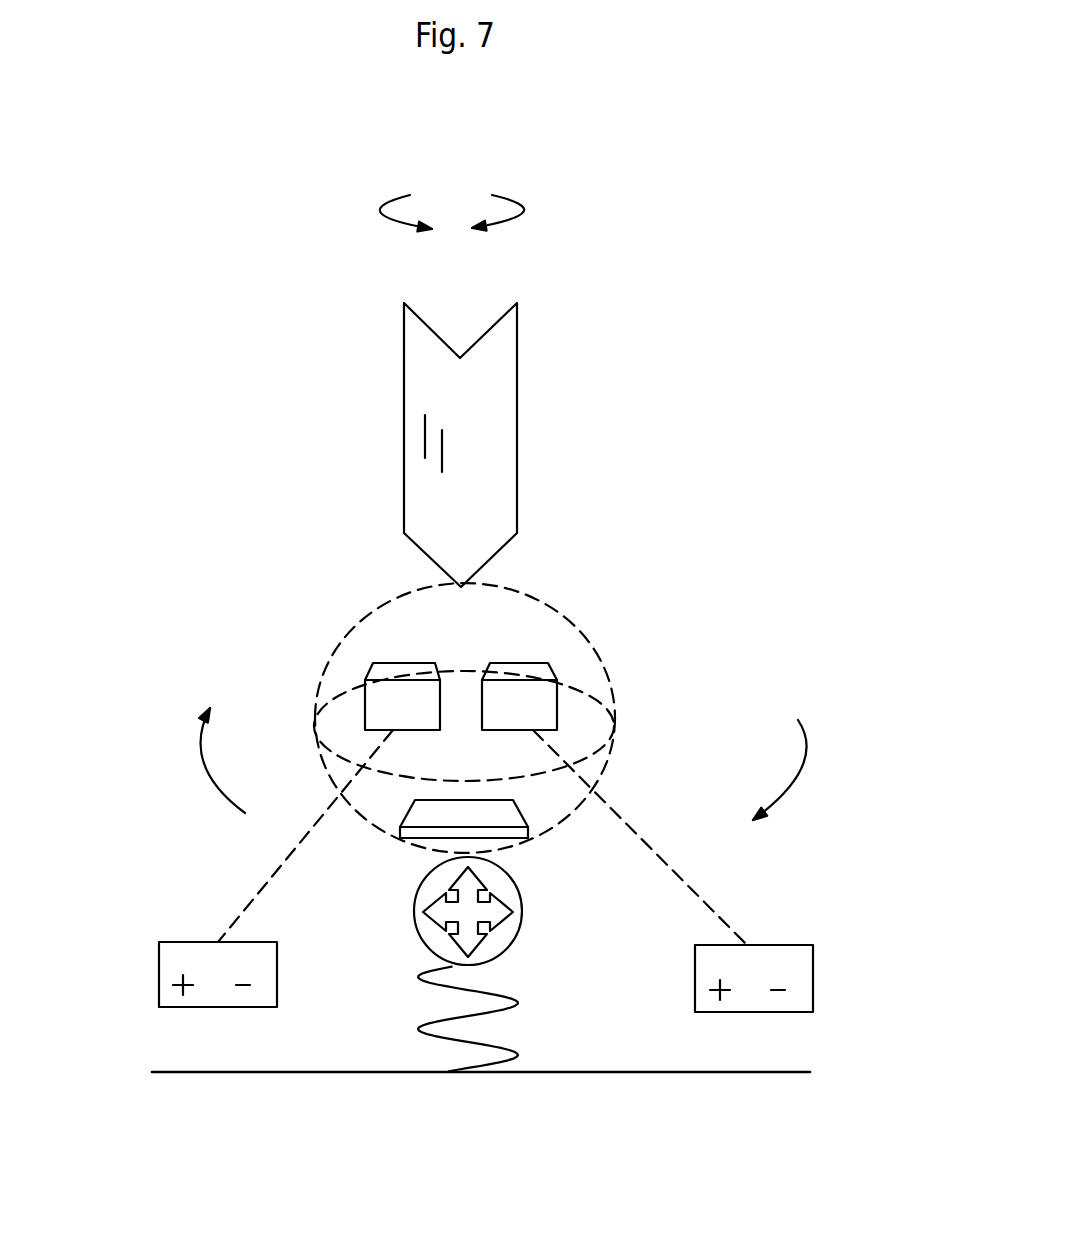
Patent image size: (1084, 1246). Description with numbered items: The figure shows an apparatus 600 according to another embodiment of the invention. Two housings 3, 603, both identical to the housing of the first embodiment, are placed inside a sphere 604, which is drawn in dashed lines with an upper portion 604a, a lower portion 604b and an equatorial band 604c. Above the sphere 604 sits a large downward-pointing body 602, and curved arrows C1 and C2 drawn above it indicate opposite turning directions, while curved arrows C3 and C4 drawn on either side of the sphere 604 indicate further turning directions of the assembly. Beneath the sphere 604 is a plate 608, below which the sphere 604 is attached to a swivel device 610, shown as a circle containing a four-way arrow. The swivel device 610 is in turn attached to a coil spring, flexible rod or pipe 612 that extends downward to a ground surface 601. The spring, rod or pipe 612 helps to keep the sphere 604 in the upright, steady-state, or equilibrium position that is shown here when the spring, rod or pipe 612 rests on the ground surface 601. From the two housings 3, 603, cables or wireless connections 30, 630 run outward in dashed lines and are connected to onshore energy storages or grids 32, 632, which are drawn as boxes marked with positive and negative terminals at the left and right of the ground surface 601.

The apparatus 600 is at (680, 387).
The ground surface 601 is at (333, 1075).
The indicator / rotor body 602 is at (496, 448).
The housing 603 is at (352, 682).
The housing 3 is at (583, 669).
The sphere 604 is at (537, 687).
The upper hemisphere of housing 604a is at (577, 625).
The lower hemisphere of housing 604b is at (573, 738).
The equatorial ring of housing 604c is at (558, 681).
The pedestal / support plate 608 is at (498, 828).
The swivel device 610 is at (502, 940).
The coil spring, flexible rod or pipe 612 is at (500, 1018).
The cable or wireless connection 630 is at (245, 900).
The onshore energy storage or grid 632 is at (248, 960).
The cable or wireless connection 30 is at (705, 898).
The onshore energy storage or grid 32 is at (785, 965).
The first rotation direction C1 is at (375, 204).
The second rotation direction C2 is at (525, 210).
The third rotation direction C3 is at (208, 760).
The fourth rotation direction C4 is at (795, 770).